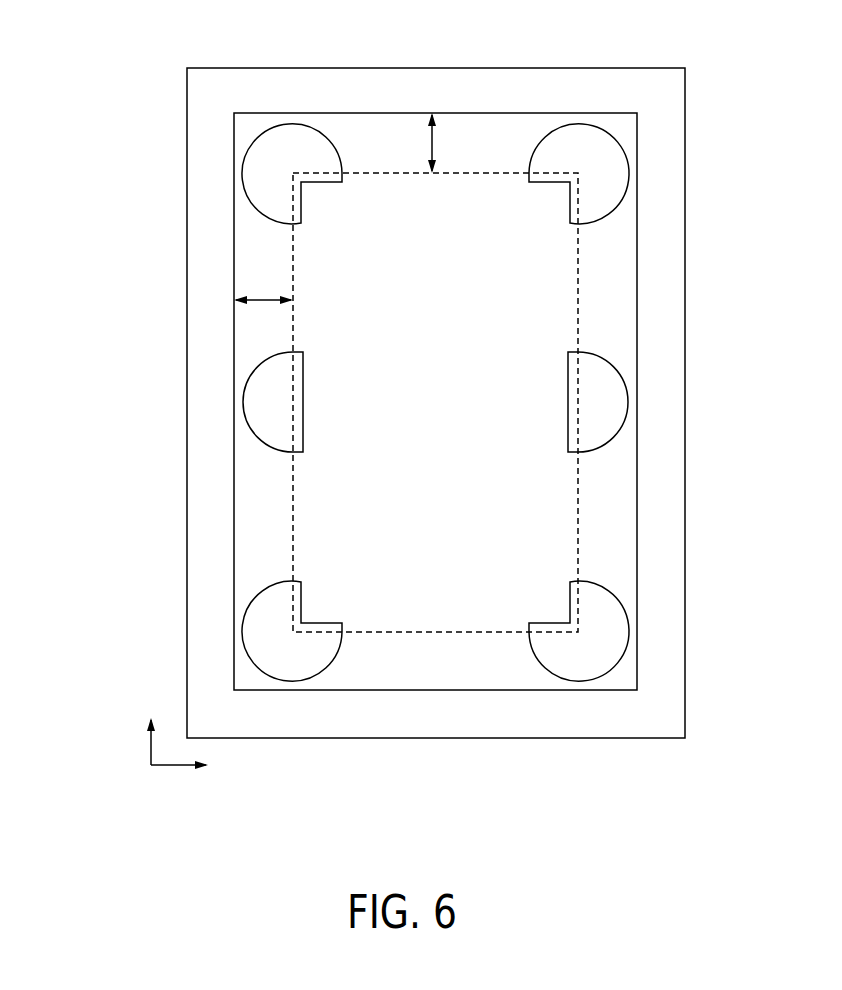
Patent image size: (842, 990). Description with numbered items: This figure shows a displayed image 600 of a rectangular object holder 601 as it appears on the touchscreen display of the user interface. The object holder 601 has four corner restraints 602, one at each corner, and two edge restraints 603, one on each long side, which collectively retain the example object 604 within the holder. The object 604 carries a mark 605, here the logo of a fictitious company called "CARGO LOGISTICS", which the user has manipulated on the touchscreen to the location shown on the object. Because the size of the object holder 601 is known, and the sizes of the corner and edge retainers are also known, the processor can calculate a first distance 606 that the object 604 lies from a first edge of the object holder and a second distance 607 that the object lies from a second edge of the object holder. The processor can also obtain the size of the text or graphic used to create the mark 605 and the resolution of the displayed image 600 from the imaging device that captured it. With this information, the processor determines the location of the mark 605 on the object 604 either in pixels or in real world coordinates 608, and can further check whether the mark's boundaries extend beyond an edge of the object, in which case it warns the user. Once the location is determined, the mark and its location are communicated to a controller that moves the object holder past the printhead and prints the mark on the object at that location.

The displayed image 600 is at (590, 68).
The rectangular object holder 601 is at (470, 113).
The corner restraints 602 is at (242, 173).
The edge restraints 603 is at (242, 402).
The object 604 is at (578, 303).
The mark 605 is at (462, 228).
The first distance 606 is at (437, 142).
The second distance 607 is at (263, 297).
The real world coordinates 608 is at (146, 779).